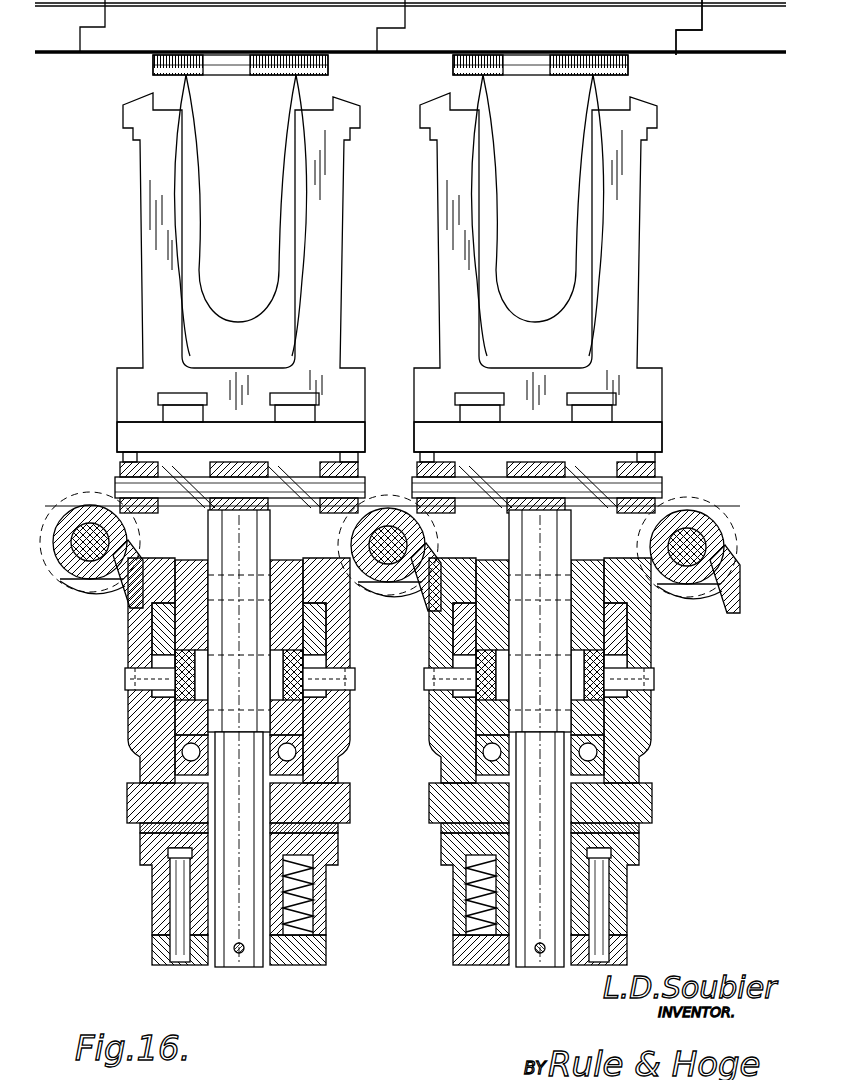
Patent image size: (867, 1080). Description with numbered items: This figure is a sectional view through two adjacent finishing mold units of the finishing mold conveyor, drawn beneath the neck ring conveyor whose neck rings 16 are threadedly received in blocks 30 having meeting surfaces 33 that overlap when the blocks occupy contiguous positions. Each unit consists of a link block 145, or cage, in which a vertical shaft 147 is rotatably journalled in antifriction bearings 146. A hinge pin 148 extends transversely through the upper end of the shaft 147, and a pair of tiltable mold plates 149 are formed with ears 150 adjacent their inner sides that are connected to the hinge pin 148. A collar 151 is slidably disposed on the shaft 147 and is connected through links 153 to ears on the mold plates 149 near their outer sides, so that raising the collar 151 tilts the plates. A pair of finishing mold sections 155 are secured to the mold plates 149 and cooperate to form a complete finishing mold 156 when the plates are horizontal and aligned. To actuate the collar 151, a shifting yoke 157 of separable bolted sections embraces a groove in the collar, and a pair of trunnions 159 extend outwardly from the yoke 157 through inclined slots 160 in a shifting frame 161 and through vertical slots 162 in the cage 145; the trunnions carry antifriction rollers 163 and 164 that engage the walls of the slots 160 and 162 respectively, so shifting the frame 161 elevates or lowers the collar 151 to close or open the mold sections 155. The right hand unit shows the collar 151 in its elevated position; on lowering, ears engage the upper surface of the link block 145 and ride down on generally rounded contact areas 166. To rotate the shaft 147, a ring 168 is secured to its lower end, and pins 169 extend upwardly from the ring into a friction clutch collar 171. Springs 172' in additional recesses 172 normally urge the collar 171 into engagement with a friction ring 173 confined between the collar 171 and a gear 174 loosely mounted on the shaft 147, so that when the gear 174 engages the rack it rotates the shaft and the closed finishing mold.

The neck ring 16 is at (153, 64).
The block 30 is at (746, 42).
The meeting surfaces 33 is at (678, 55).
The link block 145 is at (130, 605).
The antifriction bearings 146 is at (182, 748).
The vertical shaft 147 is at (250, 958).
The hinge pin 148 is at (148, 490).
The tiltable mold plates 149 is at (350, 442).
The ears 150 is at (358, 470).
The collar 151 is at (279, 540).
The links 153 is at (205, 535).
The finishing mold sections 155 is at (327, 298).
The finishing mold 156 is at (646, 282).
The shifting yoke 157 is at (302, 732).
The trunnions 159 is at (356, 684).
The inclined slots 160 is at (302, 672).
The shifting frame 161 is at (160, 648).
The vertical slots 162 is at (140, 650).
The antifriction rollers 163 is at (305, 660).
The antifriction rollers 164 is at (140, 679).
The rounded contact areas 166 is at (288, 575).
The ring 168 is at (322, 958).
The pins 169 is at (183, 957).
The friction clutch collar 171 is at (155, 906).
The recesses 172 is at (331, 895).
The springs 172' is at (403, 898).
The friction ring 173 is at (338, 838).
The gear 174 is at (352, 806).